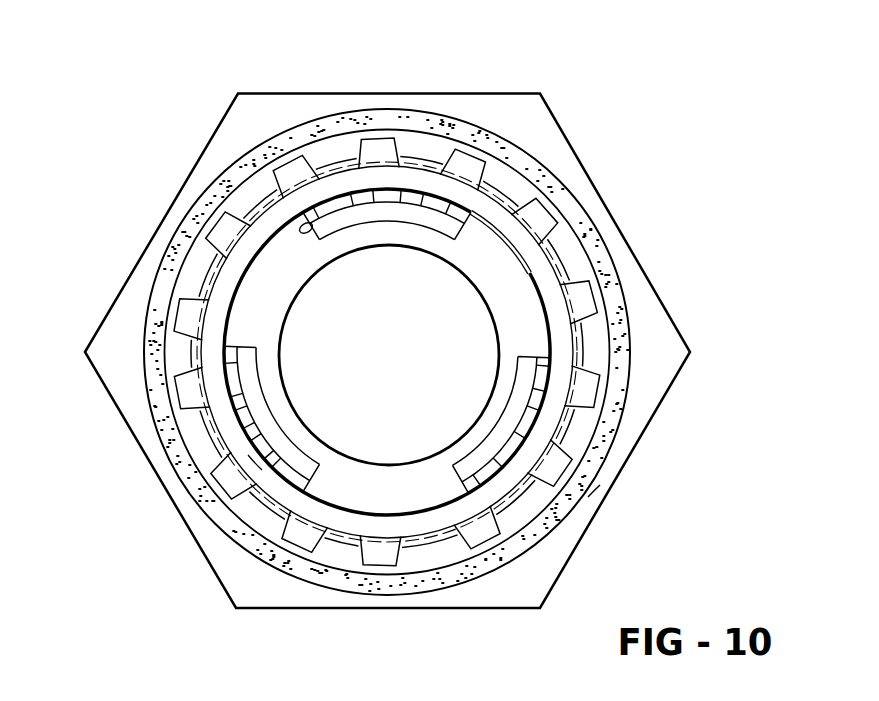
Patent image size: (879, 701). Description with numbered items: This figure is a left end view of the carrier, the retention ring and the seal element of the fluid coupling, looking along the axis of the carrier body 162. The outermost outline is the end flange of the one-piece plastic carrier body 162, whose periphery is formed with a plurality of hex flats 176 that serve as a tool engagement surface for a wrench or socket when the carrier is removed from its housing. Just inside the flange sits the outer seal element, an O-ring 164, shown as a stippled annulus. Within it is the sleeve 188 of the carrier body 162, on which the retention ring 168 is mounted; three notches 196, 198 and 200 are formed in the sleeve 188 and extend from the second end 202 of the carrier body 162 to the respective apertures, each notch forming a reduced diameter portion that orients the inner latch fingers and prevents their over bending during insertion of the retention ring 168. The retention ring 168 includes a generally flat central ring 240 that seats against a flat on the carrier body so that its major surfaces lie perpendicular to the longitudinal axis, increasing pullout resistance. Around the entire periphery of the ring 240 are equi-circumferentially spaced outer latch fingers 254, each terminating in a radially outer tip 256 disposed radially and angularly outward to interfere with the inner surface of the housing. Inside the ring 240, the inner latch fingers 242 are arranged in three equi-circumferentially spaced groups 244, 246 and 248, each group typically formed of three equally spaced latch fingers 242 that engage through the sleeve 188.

The carrier body 162 is at (412, 340).
The flats 176 is at (218, 126).
The O-ring 164 is at (456, 128).
The sleeve 188 is at (392, 311).
The outer latch fingers 254 is at (468, 158).
The retention ring 168 is at (212, 282).
The ring 240 is at (163, 360).
The inner latch fingers 242 is at (385, 194).
The group of inner latch fingers 244 is at (263, 420).
The group of inner latch fingers 246 is at (425, 220).
The group of inner latch fingers 248 is at (507, 431).
The notch 196 is at (309, 232).
The notch 200 is at (252, 468).
The second end 202 is at (412, 500).
The notch 198 is at (633, 596).
The radially outer tip 256 is at (580, 505).